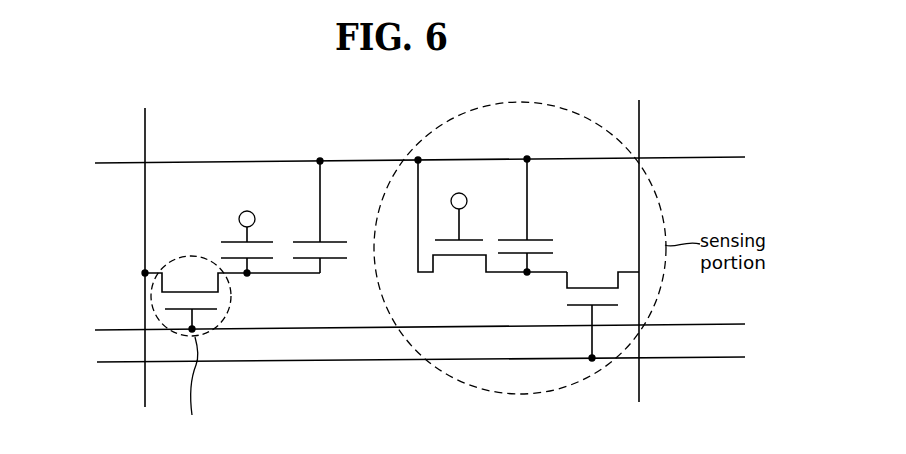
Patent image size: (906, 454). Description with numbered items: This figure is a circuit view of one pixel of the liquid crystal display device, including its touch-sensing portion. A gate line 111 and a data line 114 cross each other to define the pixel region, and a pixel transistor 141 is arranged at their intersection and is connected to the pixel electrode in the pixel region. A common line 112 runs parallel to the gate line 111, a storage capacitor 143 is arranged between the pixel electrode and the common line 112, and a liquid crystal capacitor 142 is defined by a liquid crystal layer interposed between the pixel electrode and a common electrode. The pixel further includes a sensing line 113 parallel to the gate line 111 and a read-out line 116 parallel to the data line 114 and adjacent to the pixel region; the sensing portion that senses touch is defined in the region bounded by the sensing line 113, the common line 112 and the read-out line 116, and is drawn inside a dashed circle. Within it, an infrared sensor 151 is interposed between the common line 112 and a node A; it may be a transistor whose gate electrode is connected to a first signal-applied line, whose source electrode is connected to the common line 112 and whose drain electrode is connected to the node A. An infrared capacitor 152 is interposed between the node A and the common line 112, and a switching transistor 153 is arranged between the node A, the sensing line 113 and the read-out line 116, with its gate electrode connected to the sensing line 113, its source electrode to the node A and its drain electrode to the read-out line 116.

The gate line 111 is at (388, 332).
The common line 112 is at (388, 165).
The sensing line 113 is at (389, 364).
The data line 114 is at (145, 248).
The read-out line 116 is at (641, 244).
The pixel transistor 141 is at (231, 348).
The liquid crystal capacitor 142 is at (259, 231).
The storage capacitor 143 is at (327, 217).
The infrared sensor 151 is at (492, 239).
The infrared capacitor 152 is at (533, 217).
The switching transistor 153 is at (603, 292).